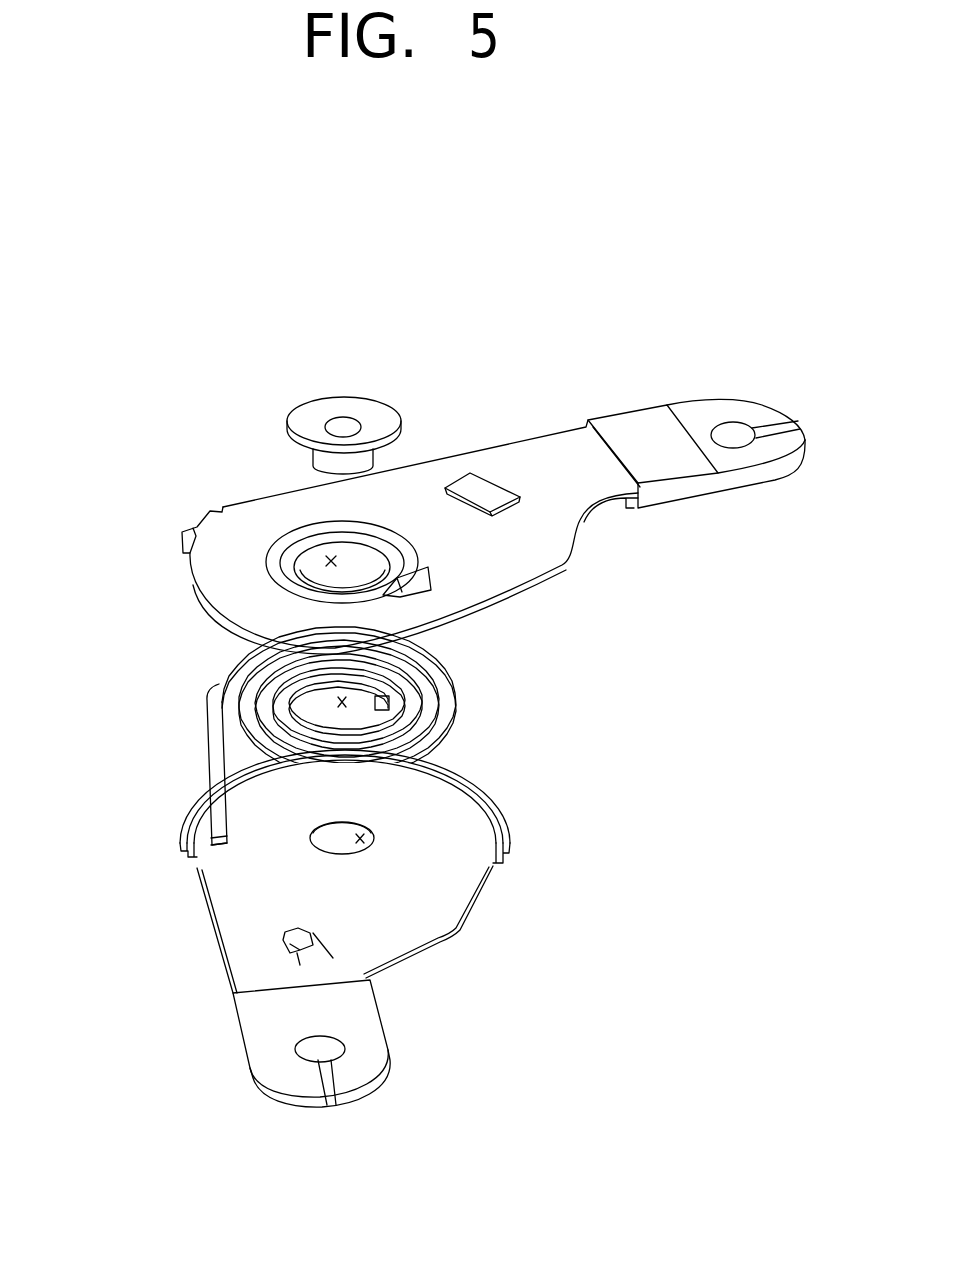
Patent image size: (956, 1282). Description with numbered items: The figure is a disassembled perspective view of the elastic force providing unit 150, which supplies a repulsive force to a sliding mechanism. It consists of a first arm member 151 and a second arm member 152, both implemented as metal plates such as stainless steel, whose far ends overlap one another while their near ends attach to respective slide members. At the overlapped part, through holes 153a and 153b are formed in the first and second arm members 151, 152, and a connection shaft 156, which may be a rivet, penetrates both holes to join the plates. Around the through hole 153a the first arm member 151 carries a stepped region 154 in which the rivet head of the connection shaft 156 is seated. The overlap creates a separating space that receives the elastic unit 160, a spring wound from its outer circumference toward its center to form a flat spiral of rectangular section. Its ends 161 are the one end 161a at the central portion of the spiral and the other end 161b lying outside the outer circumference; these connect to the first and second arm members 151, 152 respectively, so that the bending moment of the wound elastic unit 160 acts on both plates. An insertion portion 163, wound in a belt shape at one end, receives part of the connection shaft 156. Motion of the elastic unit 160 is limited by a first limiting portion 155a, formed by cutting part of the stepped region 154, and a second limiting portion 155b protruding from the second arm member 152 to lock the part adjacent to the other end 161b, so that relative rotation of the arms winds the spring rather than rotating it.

The elastic force providing unit 150 is at (681, 371).
The first arm member 151 is at (573, 448).
The second arm member 152 is at (368, 1022).
The through hole 153a is at (330, 557).
The through hole 153b is at (373, 833).
The stepped region 154 is at (293, 552).
The first limiting portion 155a is at (395, 580).
The second limiting portion 155b is at (282, 940).
The connection shaft 156 is at (357, 462).
The elastic unit 160 is at (181, 713).
The extension portion of spring 161 is at (213, 754).
The one end of the elastic unit 161a is at (390, 709).
The another end of the elastic unit 161b is at (200, 865).
The insertion portion 163 is at (338, 700).